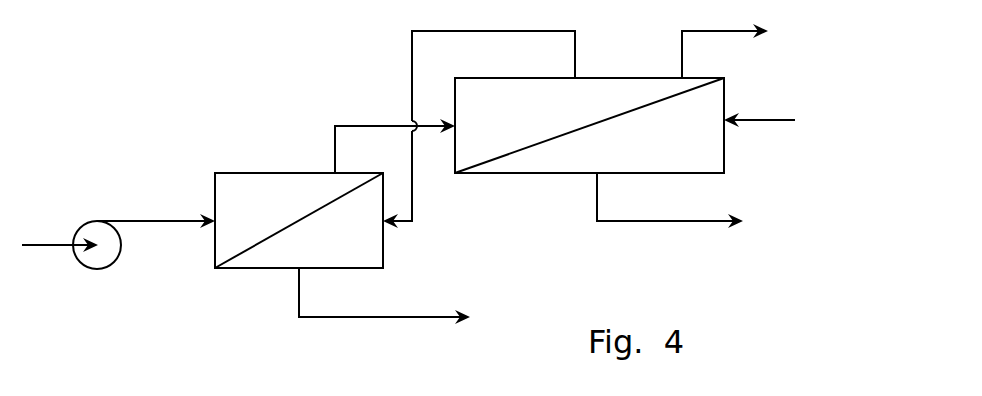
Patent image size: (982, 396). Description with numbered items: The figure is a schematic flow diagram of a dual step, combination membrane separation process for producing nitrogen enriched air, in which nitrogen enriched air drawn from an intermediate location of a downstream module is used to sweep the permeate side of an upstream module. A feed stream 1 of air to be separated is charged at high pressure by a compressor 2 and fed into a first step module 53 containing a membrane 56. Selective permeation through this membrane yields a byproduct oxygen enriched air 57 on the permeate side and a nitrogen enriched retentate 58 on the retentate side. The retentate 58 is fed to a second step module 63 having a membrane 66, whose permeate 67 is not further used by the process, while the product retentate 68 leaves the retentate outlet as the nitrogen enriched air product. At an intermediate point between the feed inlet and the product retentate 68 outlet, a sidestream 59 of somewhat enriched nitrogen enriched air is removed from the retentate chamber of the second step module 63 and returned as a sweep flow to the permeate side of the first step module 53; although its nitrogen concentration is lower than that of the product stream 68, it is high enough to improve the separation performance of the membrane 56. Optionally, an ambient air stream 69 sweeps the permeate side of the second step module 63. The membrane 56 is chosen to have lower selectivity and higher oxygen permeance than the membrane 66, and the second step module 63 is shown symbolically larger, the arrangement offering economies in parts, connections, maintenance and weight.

The feed stream 1 is at (43, 242).
The compressor 2 is at (97, 269).
The first step module 53 is at (243, 172).
The membrane 56 is at (248, 260).
The byproduct oxygen enriched air 57 is at (390, 318).
The nitrogen enriched retentate 58 is at (333, 148).
The sidestream 59 is at (410, 90).
The second step module 63 is at (502, 175).
The membrane 66 is at (585, 125).
The permeate 67 is at (682, 222).
The product retentate 68 is at (723, 32).
The ambient air stream 69 is at (752, 122).